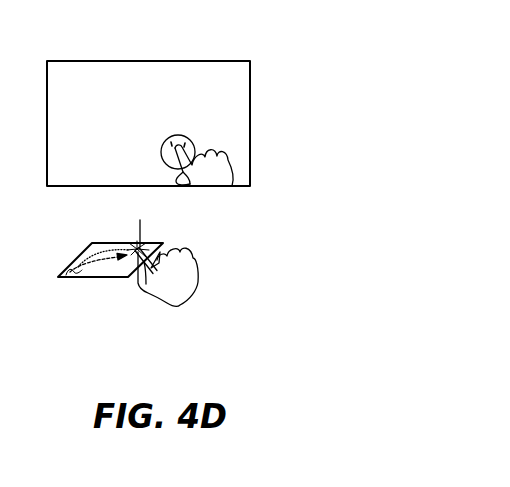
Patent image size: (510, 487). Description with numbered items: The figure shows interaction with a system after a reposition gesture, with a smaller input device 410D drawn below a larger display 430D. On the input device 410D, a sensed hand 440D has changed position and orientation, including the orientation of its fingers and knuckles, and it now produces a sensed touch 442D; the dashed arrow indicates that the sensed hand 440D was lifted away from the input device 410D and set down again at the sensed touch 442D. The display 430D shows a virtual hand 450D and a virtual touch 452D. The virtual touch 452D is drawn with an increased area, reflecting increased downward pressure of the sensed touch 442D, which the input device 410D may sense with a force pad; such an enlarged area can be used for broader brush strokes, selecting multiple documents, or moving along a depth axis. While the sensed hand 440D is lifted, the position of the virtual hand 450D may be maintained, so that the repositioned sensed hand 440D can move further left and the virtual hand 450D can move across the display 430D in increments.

The display 430D is at (225, 60).
The virtual touch 452D is at (169, 138).
The virtual hand 450D is at (233, 170).
The input device 410D is at (100, 242).
The sensed touch 442D is at (145, 246).
The sensed hand 440D is at (177, 306).